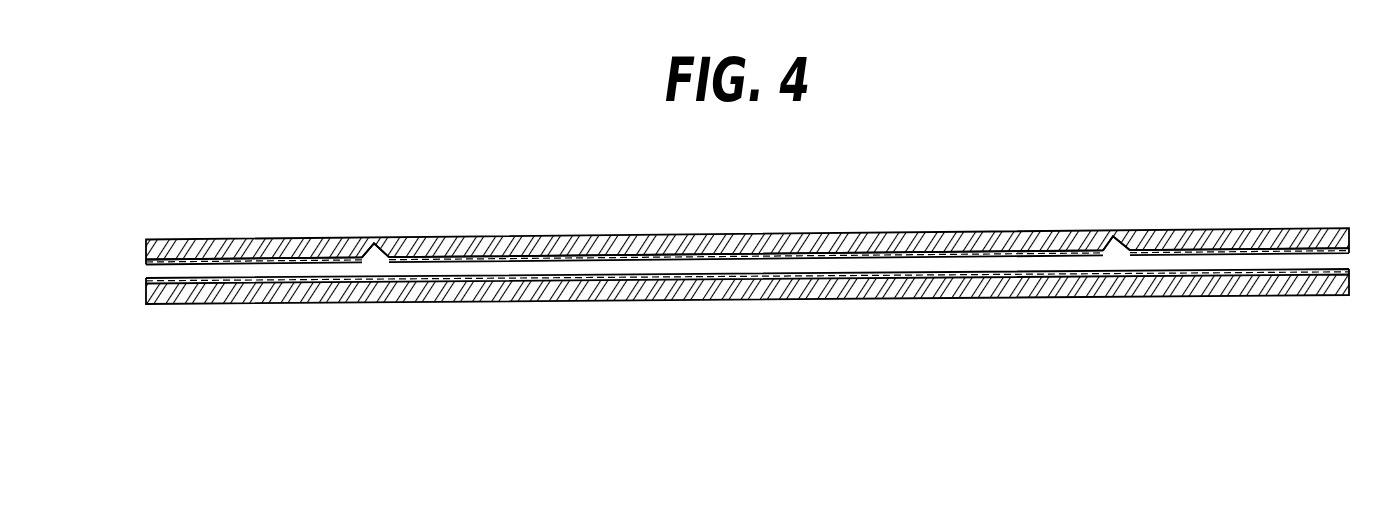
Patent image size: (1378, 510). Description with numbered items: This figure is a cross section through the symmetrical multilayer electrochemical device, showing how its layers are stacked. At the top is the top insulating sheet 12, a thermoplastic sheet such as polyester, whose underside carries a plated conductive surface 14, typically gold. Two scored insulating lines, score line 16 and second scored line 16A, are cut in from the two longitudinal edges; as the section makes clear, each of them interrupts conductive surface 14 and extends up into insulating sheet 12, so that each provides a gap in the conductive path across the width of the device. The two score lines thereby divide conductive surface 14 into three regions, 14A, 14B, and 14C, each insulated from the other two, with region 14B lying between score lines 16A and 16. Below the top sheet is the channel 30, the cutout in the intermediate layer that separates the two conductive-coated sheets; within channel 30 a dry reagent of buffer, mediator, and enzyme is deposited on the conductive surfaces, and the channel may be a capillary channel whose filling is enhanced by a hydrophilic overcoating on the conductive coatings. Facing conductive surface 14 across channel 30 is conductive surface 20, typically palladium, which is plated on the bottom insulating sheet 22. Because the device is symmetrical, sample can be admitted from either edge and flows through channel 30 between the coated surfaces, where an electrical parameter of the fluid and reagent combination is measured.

The top insulating sheet 12 is at (185, 239).
The conductive surface 14 is at (713, 291).
The first region of conductive surface 14A is at (258, 263).
The second region of conductive surface 14B is at (793, 258).
The third region of conductive surface 14C is at (1245, 256).
The second scored line 16A is at (372, 249).
The scored insulating line 16 is at (1111, 241).
The channel 30 is at (146, 272).
The conductive surface 20 is at (146, 281).
The bottom insulating sheet 22 is at (175, 304).